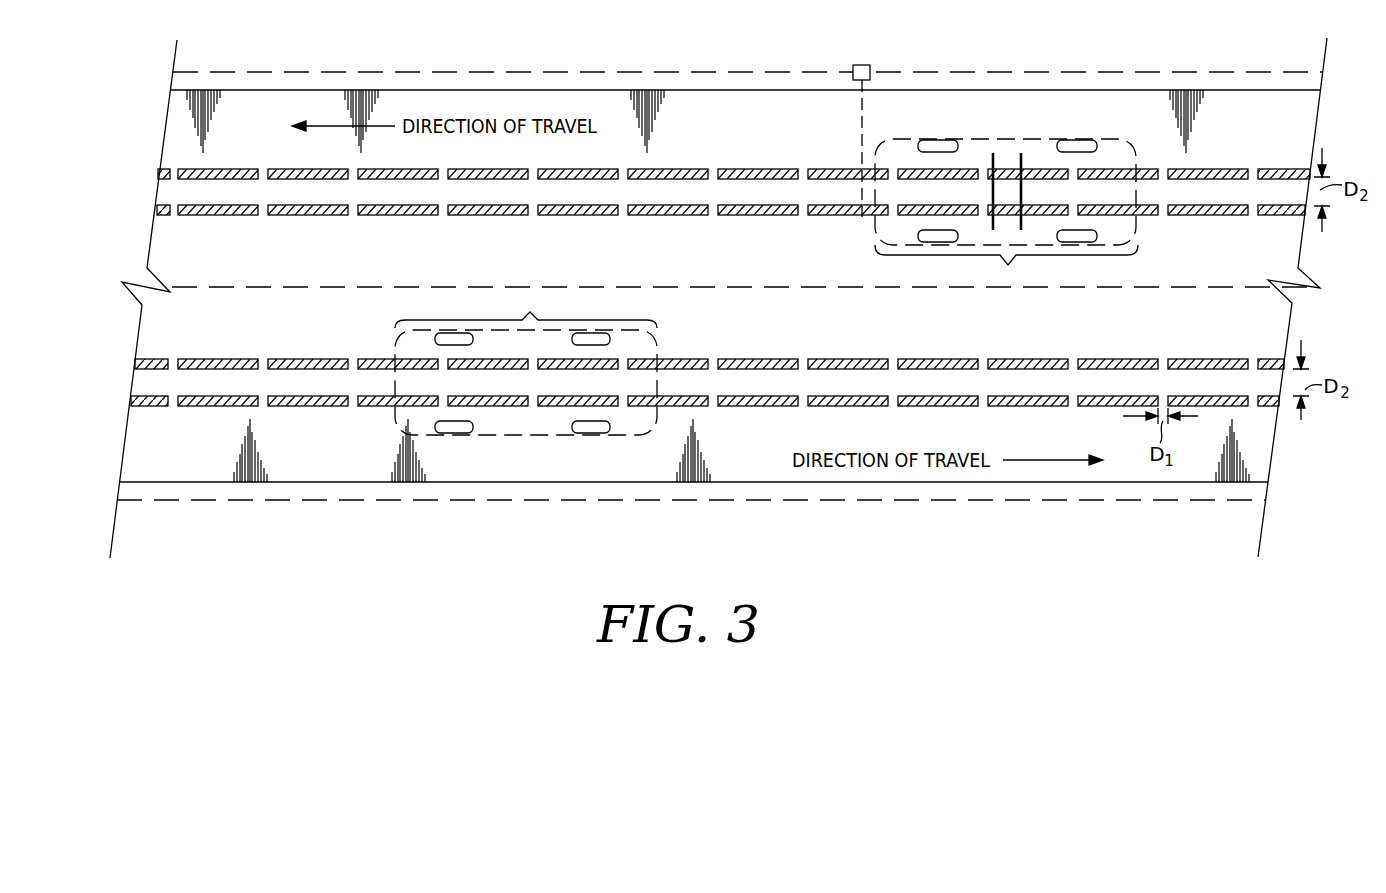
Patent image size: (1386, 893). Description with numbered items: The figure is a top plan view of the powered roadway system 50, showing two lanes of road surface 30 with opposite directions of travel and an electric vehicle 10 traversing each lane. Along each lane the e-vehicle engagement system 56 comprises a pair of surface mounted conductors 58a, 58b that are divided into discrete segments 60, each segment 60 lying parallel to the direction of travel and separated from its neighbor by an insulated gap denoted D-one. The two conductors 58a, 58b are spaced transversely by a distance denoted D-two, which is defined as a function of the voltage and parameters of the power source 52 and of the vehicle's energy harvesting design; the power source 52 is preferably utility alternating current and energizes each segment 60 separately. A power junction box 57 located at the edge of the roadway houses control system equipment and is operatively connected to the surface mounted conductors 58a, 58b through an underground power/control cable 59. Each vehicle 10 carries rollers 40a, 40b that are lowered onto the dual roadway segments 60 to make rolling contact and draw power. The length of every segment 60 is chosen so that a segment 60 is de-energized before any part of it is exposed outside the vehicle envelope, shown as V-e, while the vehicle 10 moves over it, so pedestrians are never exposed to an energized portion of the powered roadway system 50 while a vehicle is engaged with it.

The electric vehicle 10 is at (875, 232).
The road surface 30 is at (1170, 323).
The roller 40a is at (992, 153).
The roller 40b is at (1022, 153).
The powered roadway system 50 is at (721, 296).
The power source 52 is at (560, 72).
The e-vehicle engagement system 56 is at (165, 170).
The power junction box 57 is at (862, 64).
The surface mounted conductor 58a is at (656, 214).
The surface mounted conductor 58b is at (714, 291).
The underground power/control cable 59 is at (870, 126).
The segment 60 is at (714, 291).